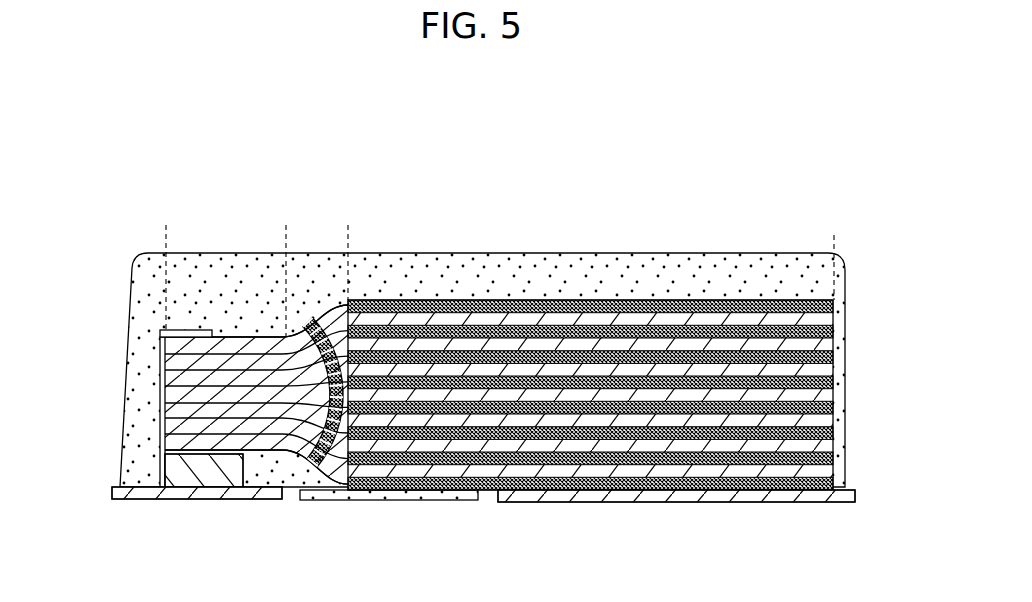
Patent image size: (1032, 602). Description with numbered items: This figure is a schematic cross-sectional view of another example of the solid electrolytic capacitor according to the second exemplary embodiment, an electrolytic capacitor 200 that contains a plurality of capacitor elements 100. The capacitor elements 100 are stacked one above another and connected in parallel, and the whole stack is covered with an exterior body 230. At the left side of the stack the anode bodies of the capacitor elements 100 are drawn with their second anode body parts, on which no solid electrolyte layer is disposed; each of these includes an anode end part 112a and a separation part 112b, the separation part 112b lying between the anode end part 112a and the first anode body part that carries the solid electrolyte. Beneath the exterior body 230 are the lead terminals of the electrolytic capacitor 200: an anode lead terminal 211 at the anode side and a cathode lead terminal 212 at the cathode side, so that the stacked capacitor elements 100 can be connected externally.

The capacitor element 100 is at (822, 477).
The anode end part 112a is at (285, 222).
The separation part 112b is at (348, 216).
The electrolytic capacitor 200 is at (172, 148).
The anode lead terminal 211 is at (182, 499).
The cathode lead terminal 212 is at (810, 502).
The exterior body 230 is at (133, 306).